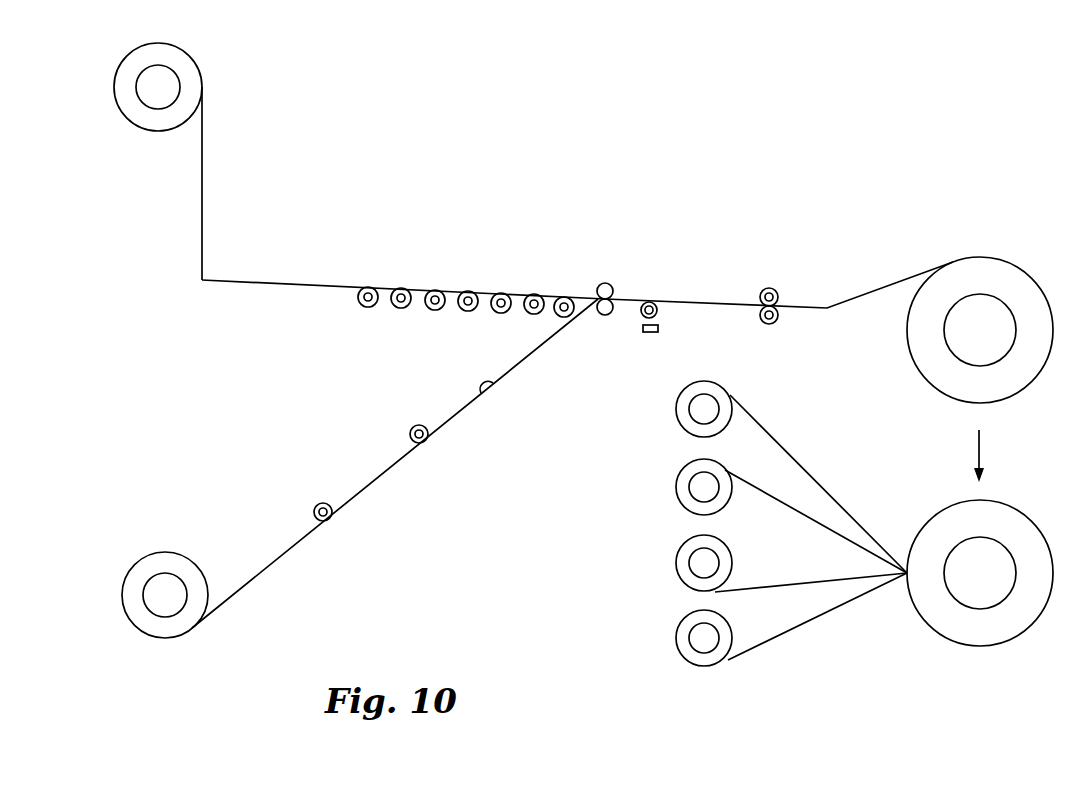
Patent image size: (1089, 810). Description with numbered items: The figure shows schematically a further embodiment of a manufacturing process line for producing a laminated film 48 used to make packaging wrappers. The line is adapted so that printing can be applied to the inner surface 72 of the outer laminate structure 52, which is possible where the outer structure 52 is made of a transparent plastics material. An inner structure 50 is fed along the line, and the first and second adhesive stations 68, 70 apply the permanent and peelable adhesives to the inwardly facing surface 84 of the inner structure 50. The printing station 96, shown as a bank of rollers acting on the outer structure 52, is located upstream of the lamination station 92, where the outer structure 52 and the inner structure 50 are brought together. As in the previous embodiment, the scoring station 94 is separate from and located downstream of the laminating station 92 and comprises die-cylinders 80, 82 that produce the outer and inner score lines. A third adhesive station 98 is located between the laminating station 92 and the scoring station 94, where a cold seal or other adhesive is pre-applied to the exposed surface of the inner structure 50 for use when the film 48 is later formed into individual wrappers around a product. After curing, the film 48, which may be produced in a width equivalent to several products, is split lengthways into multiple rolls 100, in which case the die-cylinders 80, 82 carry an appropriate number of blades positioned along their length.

The laminated film 48 is at (780, 500).
The inner structure 50 is at (259, 577).
The outer laminate structure 52 is at (205, 157).
The first adhesive station 68 is at (322, 503).
The second adhesive station 70 is at (417, 425).
The inner surface of the outer laminate structure 72 is at (258, 283).
The die-cylinder 80 is at (765, 288).
The die-cylinder 82 is at (777, 322).
The inwardly facing surface of the inner structure 84 is at (495, 389).
The lamination station 92 is at (607, 278).
The scoring station 94 is at (783, 282).
The printing station 96 is at (579, 322).
The third adhesive station 98 is at (643, 333).
The multiple rolls 100 is at (682, 430).